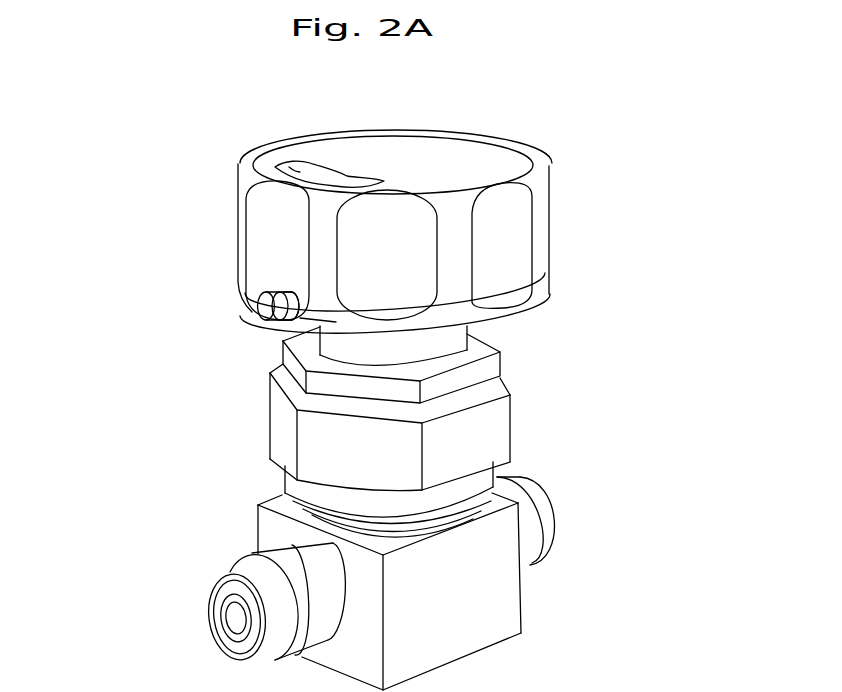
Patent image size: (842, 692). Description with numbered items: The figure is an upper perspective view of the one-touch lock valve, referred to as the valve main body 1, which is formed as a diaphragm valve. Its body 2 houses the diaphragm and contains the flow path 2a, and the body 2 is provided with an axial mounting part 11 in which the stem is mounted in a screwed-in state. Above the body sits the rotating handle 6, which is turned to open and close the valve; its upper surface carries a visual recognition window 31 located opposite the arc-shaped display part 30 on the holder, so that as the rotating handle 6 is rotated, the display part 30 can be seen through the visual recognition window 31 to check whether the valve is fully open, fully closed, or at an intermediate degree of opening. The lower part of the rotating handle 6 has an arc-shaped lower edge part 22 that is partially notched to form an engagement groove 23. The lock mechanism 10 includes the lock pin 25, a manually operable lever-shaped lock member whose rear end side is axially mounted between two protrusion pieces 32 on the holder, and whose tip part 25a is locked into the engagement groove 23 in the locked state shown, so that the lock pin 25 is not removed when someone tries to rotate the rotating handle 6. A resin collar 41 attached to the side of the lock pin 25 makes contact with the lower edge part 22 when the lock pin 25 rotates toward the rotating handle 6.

The valve main body 1 is at (525, 436).
The body 2 is at (498, 597).
The flow path 2a is at (237, 614).
The rotating handle 6 is at (493, 226).
The lock mechanism 10 is at (248, 305).
The axial mounting part 11 is at (452, 341).
The lower edge part 22 is at (525, 309).
The engagement groove 23 is at (262, 293).
The lock pin 25 is at (263, 313).
The tip part 25a is at (290, 290).
The display part 30 is at (243, 163).
The visual recognition window 31 is at (345, 177).
The protrusion pieces 32 is at (305, 380).
The collar 41 is at (307, 314).